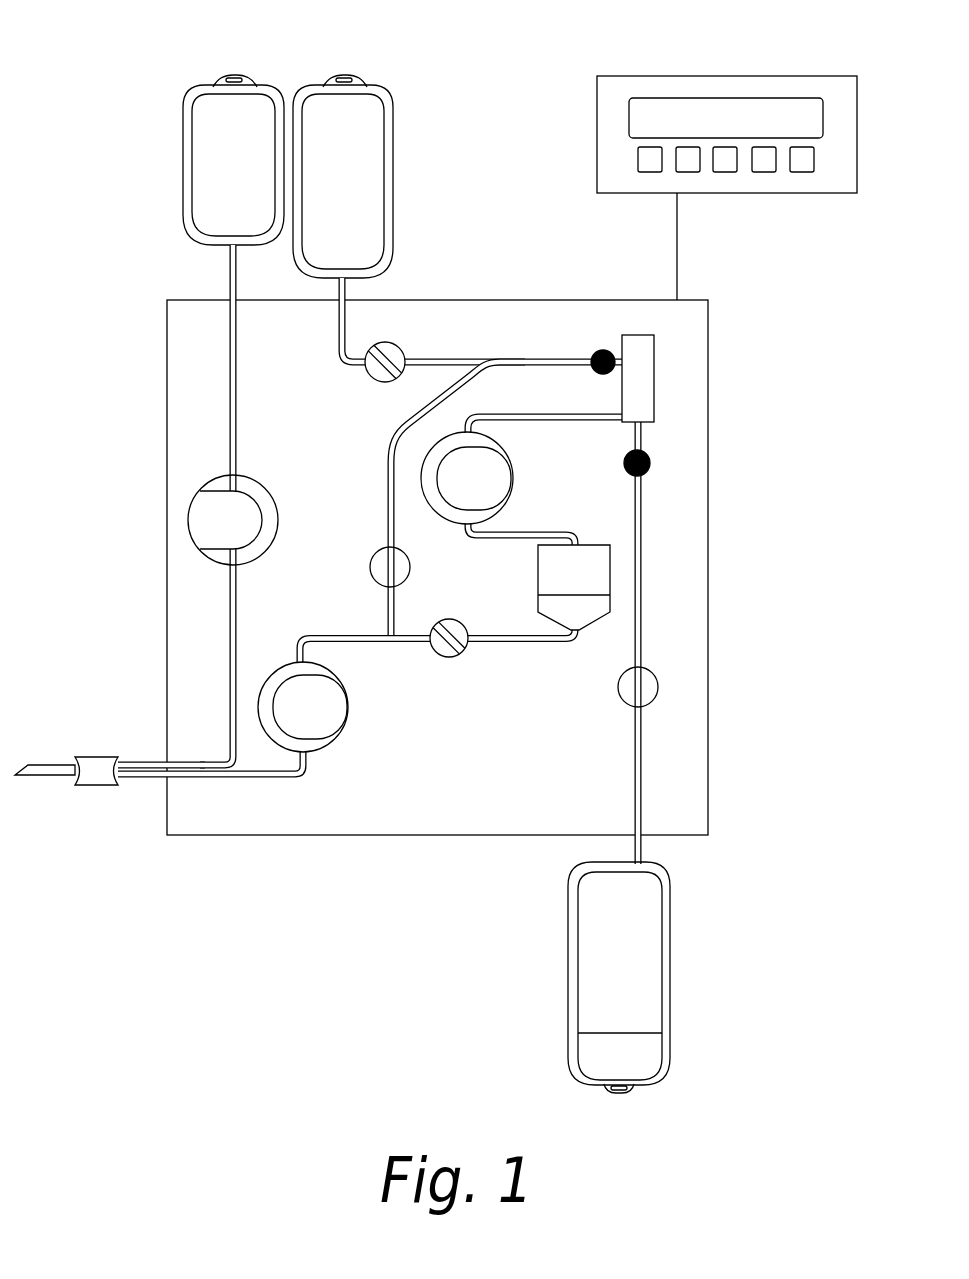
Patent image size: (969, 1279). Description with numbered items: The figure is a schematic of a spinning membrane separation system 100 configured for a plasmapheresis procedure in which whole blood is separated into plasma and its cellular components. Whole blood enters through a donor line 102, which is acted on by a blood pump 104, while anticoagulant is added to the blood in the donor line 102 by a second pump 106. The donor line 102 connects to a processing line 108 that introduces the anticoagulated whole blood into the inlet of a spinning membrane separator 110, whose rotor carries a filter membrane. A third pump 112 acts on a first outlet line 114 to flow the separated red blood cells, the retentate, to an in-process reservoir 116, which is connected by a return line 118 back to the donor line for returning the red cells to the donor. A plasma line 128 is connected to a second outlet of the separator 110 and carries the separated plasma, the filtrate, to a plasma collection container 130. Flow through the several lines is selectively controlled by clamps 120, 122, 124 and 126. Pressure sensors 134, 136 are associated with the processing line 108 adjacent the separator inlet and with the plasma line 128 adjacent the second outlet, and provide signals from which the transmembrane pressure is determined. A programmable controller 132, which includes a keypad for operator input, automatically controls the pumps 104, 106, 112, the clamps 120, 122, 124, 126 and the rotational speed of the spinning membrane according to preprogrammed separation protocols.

The spinning membrane separation system 100 is at (138, 47).
The donor line 102 is at (273, 779).
The blood pump 104 is at (350, 697).
The second pump 106 is at (190, 513).
The processing line 108 is at (513, 358).
The spinning membrane separator 110 is at (654, 353).
The third pump 112 is at (513, 494).
The first outlet line 114 is at (603, 421).
The in-process reservoir 116 is at (538, 578).
The return line 118 is at (513, 644).
The clamp 120 is at (448, 619).
The clamp 122 is at (370, 564).
The clamp 124 is at (400, 348).
The clamp 126 is at (658, 678).
The plasma line 128 is at (642, 519).
The plasma collection container 130 is at (670, 895).
The programmable controller 132 is at (795, 76).
The pressure sensor 134 is at (609, 351).
The pressure sensor 136 is at (650, 461).